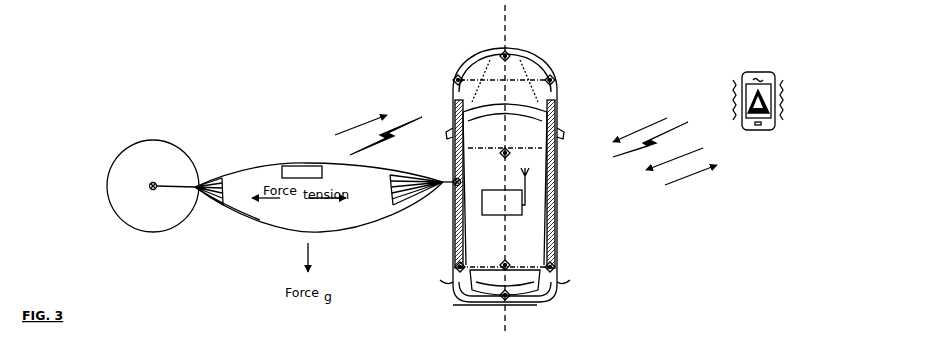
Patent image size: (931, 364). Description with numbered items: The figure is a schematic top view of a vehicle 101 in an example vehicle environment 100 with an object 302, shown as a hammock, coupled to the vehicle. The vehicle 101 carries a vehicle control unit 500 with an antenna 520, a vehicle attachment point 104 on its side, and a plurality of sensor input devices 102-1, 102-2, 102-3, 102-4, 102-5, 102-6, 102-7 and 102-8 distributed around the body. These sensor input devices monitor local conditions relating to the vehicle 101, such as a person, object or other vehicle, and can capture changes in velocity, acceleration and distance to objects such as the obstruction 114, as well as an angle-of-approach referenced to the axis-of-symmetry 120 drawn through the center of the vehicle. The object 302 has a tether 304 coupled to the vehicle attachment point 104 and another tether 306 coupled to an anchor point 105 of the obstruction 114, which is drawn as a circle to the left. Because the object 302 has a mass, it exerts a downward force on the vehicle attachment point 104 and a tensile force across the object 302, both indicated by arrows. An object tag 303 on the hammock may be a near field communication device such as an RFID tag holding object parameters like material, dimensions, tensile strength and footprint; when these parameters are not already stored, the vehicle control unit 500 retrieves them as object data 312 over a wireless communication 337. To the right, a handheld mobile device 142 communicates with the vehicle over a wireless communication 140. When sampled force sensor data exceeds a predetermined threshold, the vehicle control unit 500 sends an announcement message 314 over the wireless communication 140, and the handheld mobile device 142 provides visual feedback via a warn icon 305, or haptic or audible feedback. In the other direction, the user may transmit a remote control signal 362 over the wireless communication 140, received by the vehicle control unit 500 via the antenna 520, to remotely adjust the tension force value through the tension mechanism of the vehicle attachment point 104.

The vehicle environment 100 is at (107, 93).
The vehicle 101 is at (484, 47).
The sensor input device 102-1 is at (510, 53).
The sensor input device 102-2 is at (552, 77).
The sensor input device 102-3 is at (553, 271).
The sensor input device 102-4 is at (507, 302).
The sensor input device 102-5 is at (457, 272).
The sensor input device 102-6 is at (502, 263).
The sensor input device 102-7 is at (501, 152).
The sensor input device 102-8 is at (456, 77).
The vehicle attachment point 104 is at (456, 191).
The anchor point 105 is at (152, 196).
The obstruction 114 is at (133, 236).
The axis-of-symmetry 120 is at (501, 319).
The wireless communication 140 is at (622, 160).
The handheld mobile device 142 is at (764, 58).
The object 302 is at (287, 244).
The object tag 303 is at (289, 163).
The tether 304 is at (445, 177).
The warn icon 305 is at (776, 124).
The tether 306 is at (173, 181).
The object data 312 is at (685, 143).
The announcement message 314 is at (692, 183).
The wireless communication 337 is at (413, 120).
The remote control signal 362 is at (630, 135).
The vehicle control unit 500 is at (502, 202).
The antenna 520 is at (521, 183).